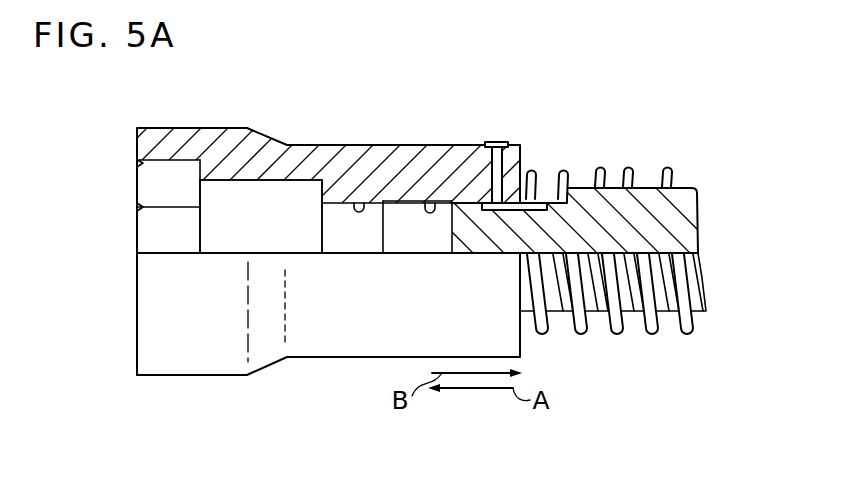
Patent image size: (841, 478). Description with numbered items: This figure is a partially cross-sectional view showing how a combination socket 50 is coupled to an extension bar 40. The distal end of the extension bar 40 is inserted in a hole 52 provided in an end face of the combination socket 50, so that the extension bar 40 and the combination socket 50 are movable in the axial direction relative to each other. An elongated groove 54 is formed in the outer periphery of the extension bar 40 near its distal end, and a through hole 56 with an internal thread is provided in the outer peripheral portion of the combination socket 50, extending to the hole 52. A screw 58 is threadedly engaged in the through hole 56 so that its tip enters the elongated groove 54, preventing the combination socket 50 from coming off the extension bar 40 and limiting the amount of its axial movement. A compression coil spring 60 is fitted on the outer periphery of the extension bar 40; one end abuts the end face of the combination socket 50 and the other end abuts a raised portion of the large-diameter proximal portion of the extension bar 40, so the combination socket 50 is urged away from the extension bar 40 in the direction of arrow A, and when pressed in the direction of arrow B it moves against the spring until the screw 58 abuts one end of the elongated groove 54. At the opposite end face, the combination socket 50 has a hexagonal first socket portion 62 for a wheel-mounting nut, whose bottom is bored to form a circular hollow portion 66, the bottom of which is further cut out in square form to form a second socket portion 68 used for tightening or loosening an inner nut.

The extension bar 40 is at (677, 189).
The combination socket 50 is at (265, 128).
The hole 52 is at (430, 204).
The elongated groove 54 is at (549, 198).
The through hole 56 is at (488, 170).
The screw 58 is at (503, 142).
The compression coil spring 60 is at (640, 336).
The first socket portion 62 is at (137, 166).
The circular hollow portion 66 is at (280, 228).
The second socket portion 68 is at (359, 204).